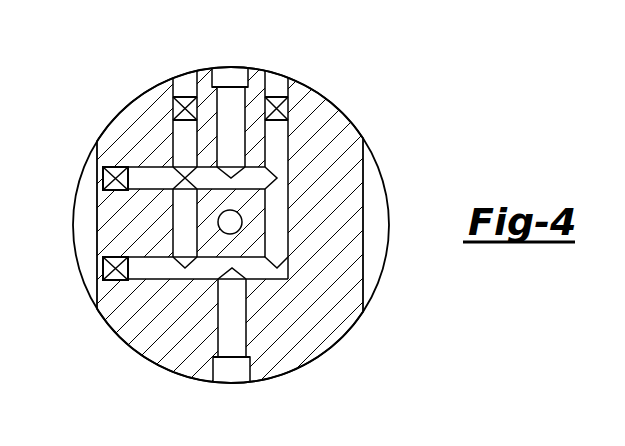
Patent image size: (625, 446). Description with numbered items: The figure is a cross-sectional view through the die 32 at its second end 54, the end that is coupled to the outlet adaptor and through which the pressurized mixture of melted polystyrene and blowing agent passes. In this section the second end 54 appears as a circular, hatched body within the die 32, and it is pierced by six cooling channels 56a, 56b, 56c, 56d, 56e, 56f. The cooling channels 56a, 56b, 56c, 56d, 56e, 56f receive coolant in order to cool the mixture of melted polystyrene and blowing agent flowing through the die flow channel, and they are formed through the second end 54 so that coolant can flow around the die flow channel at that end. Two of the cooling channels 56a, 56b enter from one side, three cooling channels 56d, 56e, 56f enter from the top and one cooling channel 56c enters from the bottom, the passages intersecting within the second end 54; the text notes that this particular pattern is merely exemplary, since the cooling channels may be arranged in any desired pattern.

The die 32 is at (368, 115).
The second end 54 is at (370, 180).
The cooling channel 56a is at (98, 183).
The cooling channel 56b is at (98, 270).
The cooling channel 56c is at (233, 370).
The cooling channel 56d is at (277, 77).
The cooling channel 56e is at (230, 73).
The cooling channel 56f is at (182, 80).